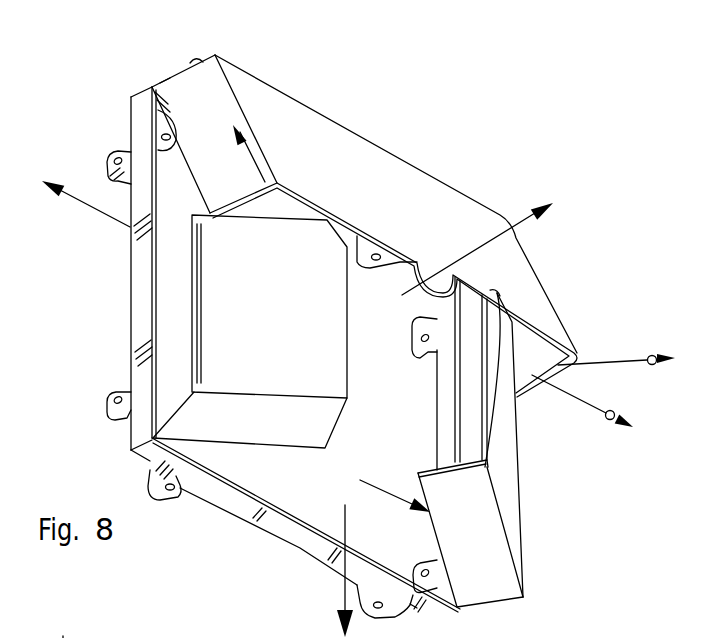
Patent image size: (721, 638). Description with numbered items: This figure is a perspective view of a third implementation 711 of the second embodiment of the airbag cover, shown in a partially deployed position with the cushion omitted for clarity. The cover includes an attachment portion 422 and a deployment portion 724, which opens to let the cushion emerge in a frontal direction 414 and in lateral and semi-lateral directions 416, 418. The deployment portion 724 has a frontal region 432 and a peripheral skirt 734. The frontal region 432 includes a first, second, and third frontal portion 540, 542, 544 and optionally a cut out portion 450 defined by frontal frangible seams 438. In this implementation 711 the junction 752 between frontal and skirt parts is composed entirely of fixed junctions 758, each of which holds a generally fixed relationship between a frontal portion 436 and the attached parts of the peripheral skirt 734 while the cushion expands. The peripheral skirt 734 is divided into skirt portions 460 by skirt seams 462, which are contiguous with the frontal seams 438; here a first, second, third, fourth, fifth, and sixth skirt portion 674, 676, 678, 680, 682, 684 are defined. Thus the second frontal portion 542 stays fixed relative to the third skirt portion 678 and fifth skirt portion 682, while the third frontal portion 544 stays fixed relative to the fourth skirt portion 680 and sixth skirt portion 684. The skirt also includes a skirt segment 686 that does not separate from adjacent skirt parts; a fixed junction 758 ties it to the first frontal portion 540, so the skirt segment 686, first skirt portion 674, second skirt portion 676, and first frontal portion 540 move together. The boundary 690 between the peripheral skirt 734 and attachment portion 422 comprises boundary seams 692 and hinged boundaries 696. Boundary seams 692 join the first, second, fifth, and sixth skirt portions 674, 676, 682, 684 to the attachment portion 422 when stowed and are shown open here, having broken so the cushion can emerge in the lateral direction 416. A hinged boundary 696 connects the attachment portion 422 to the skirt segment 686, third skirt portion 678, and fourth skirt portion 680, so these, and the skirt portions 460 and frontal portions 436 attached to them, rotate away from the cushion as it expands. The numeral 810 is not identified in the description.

The third implementation 711 is at (41, 116).
The frontal region 432 is at (420, 175).
The first frontal portion 540 is at (463, 203).
The junction 752 is at (245, 127).
The skirt segment 686 is at (202, 62).
The deployment portion 724 is at (167, 77).
The attachment portion 422 is at (133, 100).
The first skirt portion 674 is at (152, 112).
The third skirt portion 678 is at (157, 295).
The peripheral skirt 734 is at (147, 327).
The hinged boundary 696 is at (152, 83).
The boundary seam 692 is at (158, 170).
The boundary 690 is at (147, 427).
The fifth skirt portion 682 is at (214, 445).
The skirt seam 462 is at (212, 200).
The second frontal portion 542 is at (202, 278).
The frontal frangible seam 438 is at (300, 203).
The fixed junction 758 is at (245, 66).
The skirt portion 460 is at (250, 438).
The cut out portion 450 is at (428, 263).
The frontal direction 414 is at (470, 253).
The fourth skirt portion 680 is at (479, 417).
The third frontal portion 544 is at (512, 427).
The frontal portion 436 is at (513, 490).
The sixth skirt portion 684 is at (485, 597).
The second skirt portion 676 is at (557, 360).
The lateral direction 416 is at (78, 200).
The semi-lateral direction 418 is at (258, 153).
The reference mark 810 is at (65, 624).